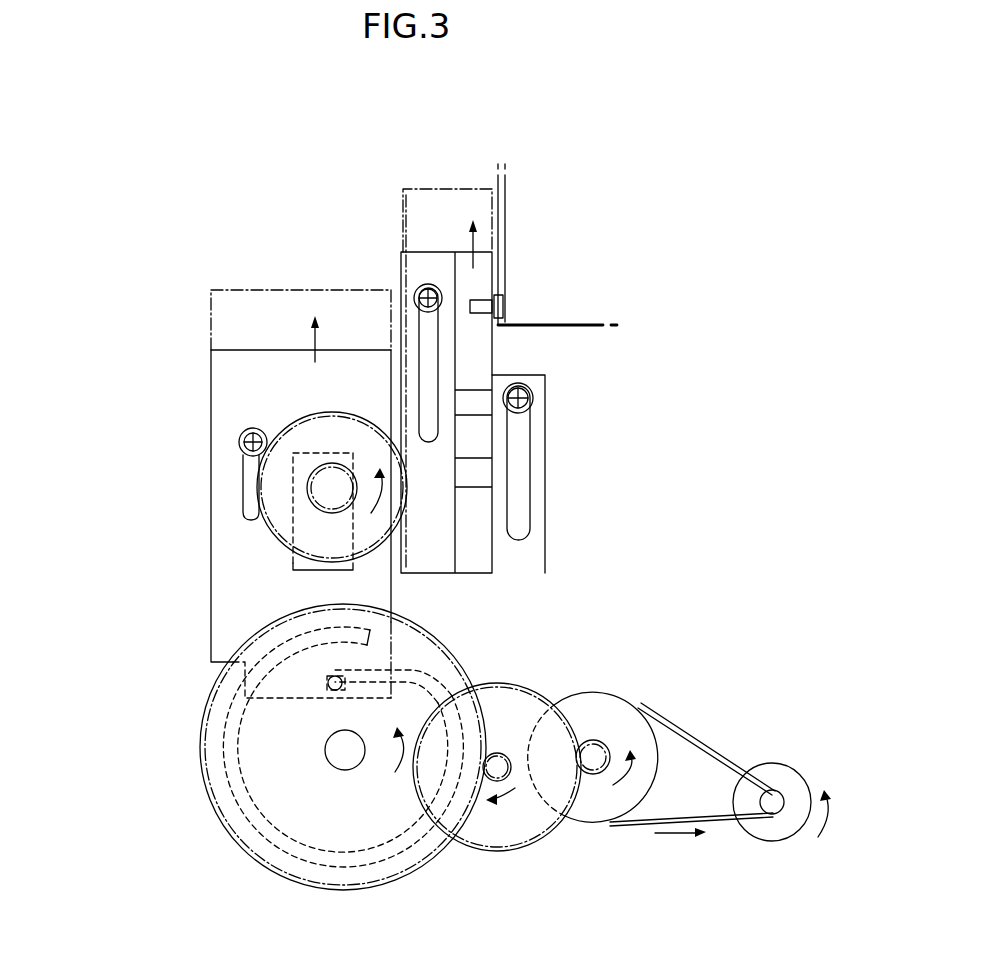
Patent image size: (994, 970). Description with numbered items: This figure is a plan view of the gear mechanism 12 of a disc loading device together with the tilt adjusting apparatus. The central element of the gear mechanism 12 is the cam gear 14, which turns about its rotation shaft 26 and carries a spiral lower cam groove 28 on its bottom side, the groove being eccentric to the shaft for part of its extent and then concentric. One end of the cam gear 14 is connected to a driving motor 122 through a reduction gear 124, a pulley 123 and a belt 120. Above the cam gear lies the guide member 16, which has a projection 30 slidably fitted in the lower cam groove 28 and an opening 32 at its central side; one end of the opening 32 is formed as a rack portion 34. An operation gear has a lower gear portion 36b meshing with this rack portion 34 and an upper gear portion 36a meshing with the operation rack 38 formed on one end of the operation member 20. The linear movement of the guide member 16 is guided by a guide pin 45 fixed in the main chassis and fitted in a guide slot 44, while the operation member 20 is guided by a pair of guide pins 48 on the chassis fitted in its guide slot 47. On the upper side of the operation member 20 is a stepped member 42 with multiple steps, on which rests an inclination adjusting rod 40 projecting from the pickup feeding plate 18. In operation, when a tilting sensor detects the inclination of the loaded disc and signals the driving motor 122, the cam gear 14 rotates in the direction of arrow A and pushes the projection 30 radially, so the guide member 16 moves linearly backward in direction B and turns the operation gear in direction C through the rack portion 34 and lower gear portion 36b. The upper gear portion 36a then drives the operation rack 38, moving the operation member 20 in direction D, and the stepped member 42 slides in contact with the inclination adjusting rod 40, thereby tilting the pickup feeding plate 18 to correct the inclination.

The gear mechanism 12 is at (531, 872).
The cam gear 14 is at (225, 835).
The guide member 16 is at (214, 515).
The pickup feeding plate 18 is at (590, 327).
The operation member 20 is at (550, 425).
The rotation shaft 26 is at (363, 755).
The lower cam groove 28 is at (420, 680).
The projection 30 is at (328, 683).
The opening 32 is at (325, 543).
The rack portion 34 is at (396, 570).
The upper gear portion 36a is at (310, 430).
The lower gear portion 36b is at (333, 487).
The operation rack 38 is at (402, 275).
The inclination adjusting rod 40 is at (472, 300).
The stepped member 42 is at (480, 540).
The guide slot 44 is at (245, 477).
The guide pin 45 is at (243, 437).
The guide slot 47 is at (428, 366).
The guide pin 48 is at (433, 286).
The belt 120 is at (697, 740).
The driving motor 122 is at (799, 773).
The pulley 123 is at (617, 713).
The reduction gear 124 is at (513, 702).